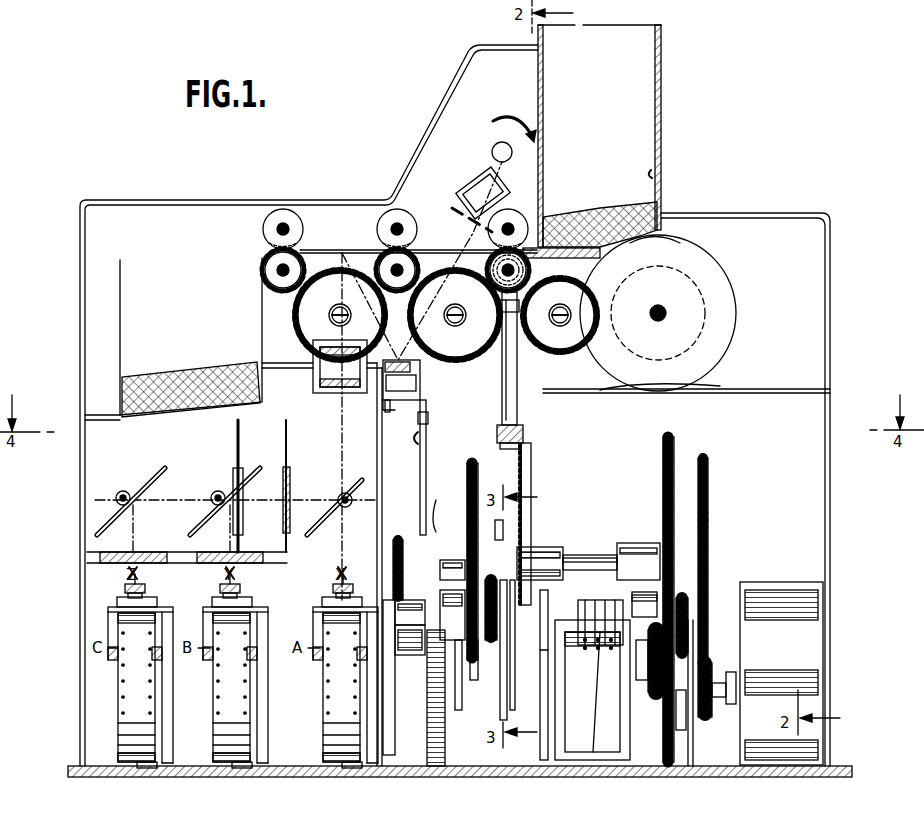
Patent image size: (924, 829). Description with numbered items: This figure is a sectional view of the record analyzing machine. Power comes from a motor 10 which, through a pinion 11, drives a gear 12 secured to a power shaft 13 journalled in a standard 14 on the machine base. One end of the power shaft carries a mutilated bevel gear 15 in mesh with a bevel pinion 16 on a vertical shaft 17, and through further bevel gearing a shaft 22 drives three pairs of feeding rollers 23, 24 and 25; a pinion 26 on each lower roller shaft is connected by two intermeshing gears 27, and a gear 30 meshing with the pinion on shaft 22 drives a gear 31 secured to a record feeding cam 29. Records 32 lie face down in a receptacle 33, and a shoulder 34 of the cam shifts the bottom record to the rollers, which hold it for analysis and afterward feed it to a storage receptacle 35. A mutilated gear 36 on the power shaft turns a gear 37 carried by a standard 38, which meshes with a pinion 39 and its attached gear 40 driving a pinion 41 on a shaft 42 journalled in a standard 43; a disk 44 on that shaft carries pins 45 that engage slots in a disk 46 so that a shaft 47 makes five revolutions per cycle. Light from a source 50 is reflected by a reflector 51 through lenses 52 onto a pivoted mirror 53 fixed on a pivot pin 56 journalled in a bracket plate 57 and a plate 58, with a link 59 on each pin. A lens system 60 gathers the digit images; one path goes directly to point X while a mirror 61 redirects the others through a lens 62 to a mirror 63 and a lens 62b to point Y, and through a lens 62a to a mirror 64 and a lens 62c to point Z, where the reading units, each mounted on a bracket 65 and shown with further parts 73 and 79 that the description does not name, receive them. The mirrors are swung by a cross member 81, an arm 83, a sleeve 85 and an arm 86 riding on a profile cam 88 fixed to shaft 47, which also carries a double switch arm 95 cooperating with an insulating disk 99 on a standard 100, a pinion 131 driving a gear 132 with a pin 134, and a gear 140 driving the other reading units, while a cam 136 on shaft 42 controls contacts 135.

The motor 10 is at (775, 600).
The pinion 11 is at (706, 718).
The gear 12 is at (709, 632).
The power shaft 13 is at (582, 557).
The standard 14 is at (555, 548).
The mutilated bevel gear 15 is at (532, 470).
The bevel pinion 16 is at (523, 436).
The vertical shaft 17 is at (518, 372).
The shaft 22 is at (493, 268).
The feeding rollers 23 is at (496, 233).
The feeding rollers 24 is at (414, 235).
The feeding rollers 25 is at (306, 238).
The pinion 26 is at (280, 292).
The intermeshing gears 27 is at (312, 322).
The record feeding cam 29 is at (718, 350).
The gear 30 is at (562, 352).
The gear 31 is at (705, 308).
The records 32 is at (655, 205).
The receptacle 33 is at (661, 176).
The shoulders 34 is at (640, 248).
The storage receptacle 35 is at (200, 380).
The mutilated gear 36 is at (662, 458).
The gear 37 is at (697, 520).
The standard 38 is at (622, 600).
The pinion 39 is at (662, 694).
The gear 40 is at (678, 732).
The pinion 41 is at (690, 612).
The shaft 42 is at (592, 631).
The standard 43 is at (640, 735).
The disk 44 is at (522, 651).
The pins 45 is at (505, 615).
The disk 46 is at (500, 700).
The shaft 47 is at (410, 608).
The source of light 50 is at (492, 149).
The reflector 51 is at (519, 120).
The optical lenses 52 is at (469, 190).
The mirror 53 is at (458, 214).
The pivot pins 56 is at (401, 380).
The bracket plate 57 is at (410, 398).
The plate 58 is at (390, 412).
The link 59 is at (422, 440).
The lens system 60 is at (320, 376).
The mirror 61 is at (337, 498).
The lens 62 is at (283, 510).
The lens 62a is at (233, 478).
The lens 62b is at (250, 563).
The lens 62c is at (150, 563).
The mirror 63 is at (216, 515).
The mirror 64 is at (132, 506).
The bracket 65 is at (170, 695).
The container 73 is at (128, 724).
The valve 79 is at (125, 588).
The cross member 81 is at (428, 418).
The arm 83 is at (427, 472).
The sleeve 85 is at (440, 507).
The arm 86 is at (509, 525).
The profile cam 88 is at (480, 685).
The double switch arm 95 is at (436, 660).
The disk of insulation 99 is at (430, 635).
The standard 100 is at (440, 738).
The pinion 131 is at (465, 645).
The gear 132 is at (466, 500).
The pin 134 is at (455, 580).
The contacts 135 is at (612, 630).
The cam 136 is at (633, 610).
The gear 140 is at (390, 690).